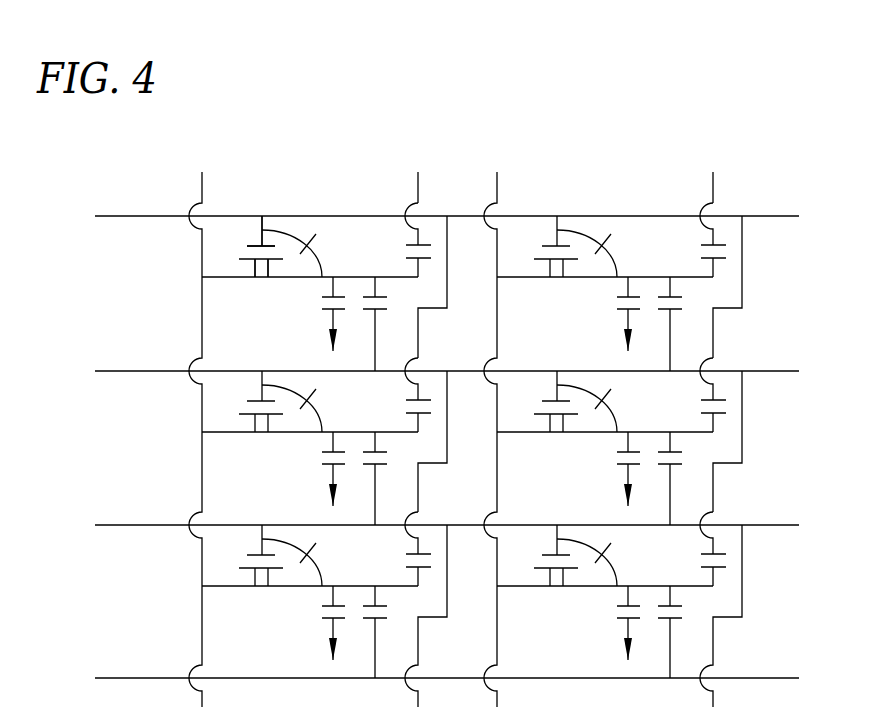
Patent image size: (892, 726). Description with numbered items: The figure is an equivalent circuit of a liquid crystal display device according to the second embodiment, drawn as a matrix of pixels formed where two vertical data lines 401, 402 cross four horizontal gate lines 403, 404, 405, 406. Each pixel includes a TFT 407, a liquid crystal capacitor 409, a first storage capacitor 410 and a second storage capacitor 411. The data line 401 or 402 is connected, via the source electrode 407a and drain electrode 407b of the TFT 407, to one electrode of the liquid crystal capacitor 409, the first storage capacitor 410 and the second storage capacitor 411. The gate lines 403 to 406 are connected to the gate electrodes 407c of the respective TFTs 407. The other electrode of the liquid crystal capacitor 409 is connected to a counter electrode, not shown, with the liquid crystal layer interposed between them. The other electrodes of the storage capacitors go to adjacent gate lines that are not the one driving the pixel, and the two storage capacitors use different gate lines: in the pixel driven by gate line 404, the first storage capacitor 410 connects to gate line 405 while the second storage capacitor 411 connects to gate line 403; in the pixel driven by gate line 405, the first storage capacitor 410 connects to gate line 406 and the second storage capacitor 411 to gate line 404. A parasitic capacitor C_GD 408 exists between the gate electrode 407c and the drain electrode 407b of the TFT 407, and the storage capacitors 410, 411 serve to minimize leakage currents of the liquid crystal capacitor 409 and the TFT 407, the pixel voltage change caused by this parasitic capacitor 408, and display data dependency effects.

The data line 401 is at (204, 190).
The data line 402 is at (499, 190).
The gate line 403 is at (117, 214).
The gate line 404 is at (113, 368).
The gate line 405 is at (113, 522).
The gate line 406 is at (113, 676).
The TFT 407 is at (234, 246).
The source electrode 407a is at (203, 290).
The drain electrode 407b is at (295, 280).
The gate electrode 407c is at (268, 214).
The parasitic capacitor C_GD 408 is at (320, 232).
The liquid crystal capacitor 409 is at (317, 308).
The first storage capacitor 410 is at (361, 297).
The second storage capacitor 411 is at (421, 242).